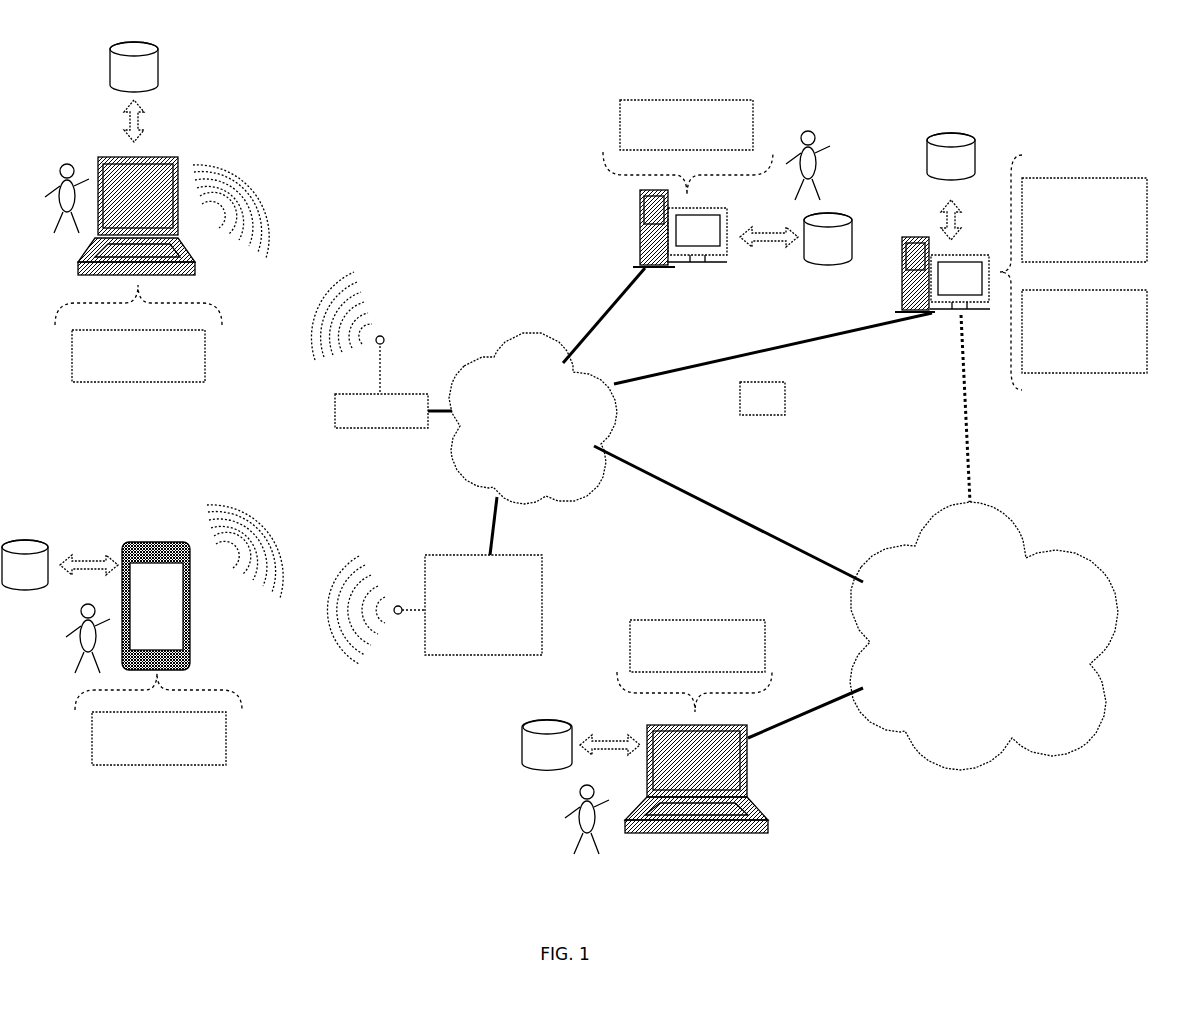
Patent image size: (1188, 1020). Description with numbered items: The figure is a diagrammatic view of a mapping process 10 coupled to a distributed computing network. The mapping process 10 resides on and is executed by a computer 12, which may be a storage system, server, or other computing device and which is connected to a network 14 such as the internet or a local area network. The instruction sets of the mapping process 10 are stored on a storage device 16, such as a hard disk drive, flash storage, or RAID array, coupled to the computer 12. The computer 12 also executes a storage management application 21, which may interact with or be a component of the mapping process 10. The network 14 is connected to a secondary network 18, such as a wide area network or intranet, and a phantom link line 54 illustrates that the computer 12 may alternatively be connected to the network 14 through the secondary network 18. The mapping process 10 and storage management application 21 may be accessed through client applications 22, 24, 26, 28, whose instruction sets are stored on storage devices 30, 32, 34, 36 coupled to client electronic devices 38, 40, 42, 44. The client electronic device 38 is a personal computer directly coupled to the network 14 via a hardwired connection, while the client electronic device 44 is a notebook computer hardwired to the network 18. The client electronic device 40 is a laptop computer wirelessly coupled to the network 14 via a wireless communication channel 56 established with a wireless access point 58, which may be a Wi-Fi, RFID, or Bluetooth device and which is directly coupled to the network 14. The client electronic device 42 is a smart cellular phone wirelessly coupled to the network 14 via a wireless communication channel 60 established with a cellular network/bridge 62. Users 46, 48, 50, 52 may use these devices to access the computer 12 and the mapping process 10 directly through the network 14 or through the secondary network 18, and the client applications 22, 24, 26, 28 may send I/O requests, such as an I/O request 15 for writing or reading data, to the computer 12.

The mapping process 10 is at (1147, 208).
The computer 12 is at (903, 255).
The network 14 is at (533, 418).
The I/O request 15 is at (740, 395).
The storage device 16 is at (951, 186).
The secondary network 18 is at (984, 636).
The storage management application 21 is at (1147, 322).
The client application 22 is at (753, 128).
The client application 24 is at (205, 366).
The client application 26 is at (226, 728).
The client application 28 is at (765, 646).
The storage device 30 is at (796, 239).
The storage device 32 is at (134, 92).
The storage device 34 is at (60, 565).
The storage device 36 is at (581, 745).
The client electronic device 38 is at (630, 215).
The client electronic device 40 is at (175, 183).
The client electronic device 42 is at (195, 590).
The client electronic device 44 is at (748, 772).
The user 46 is at (829, 143).
The user 48 is at (30, 185).
The user 50 is at (63, 618).
The user 52 is at (552, 809).
The phantom link line 54 is at (938, 380).
The wireless communication channel 56 is at (320, 233).
The wireless access point 58 is at (328, 410).
The wireless communication channel 60 is at (312, 555).
The cellular network/bridge 62 is at (543, 572).